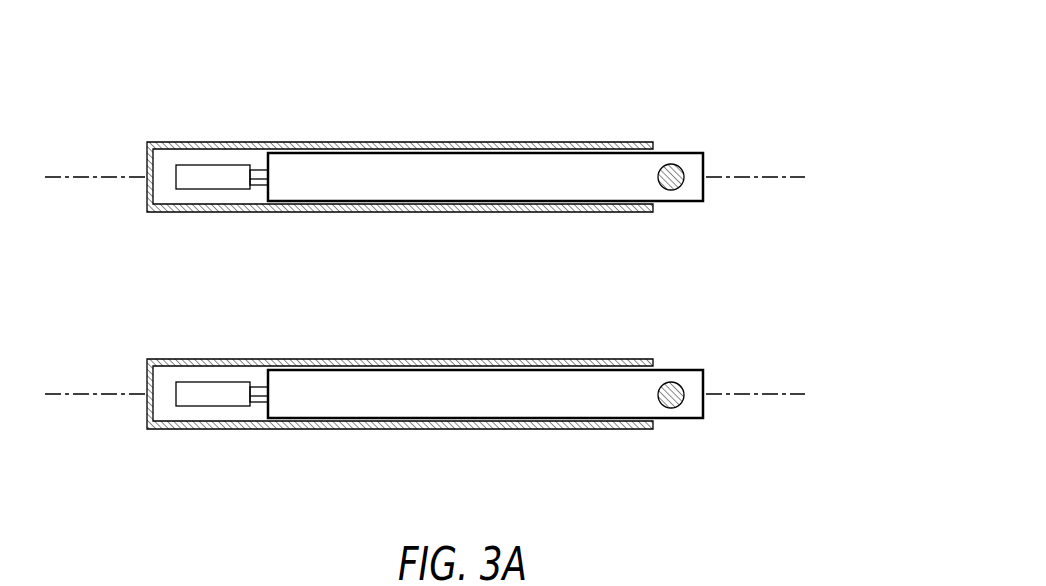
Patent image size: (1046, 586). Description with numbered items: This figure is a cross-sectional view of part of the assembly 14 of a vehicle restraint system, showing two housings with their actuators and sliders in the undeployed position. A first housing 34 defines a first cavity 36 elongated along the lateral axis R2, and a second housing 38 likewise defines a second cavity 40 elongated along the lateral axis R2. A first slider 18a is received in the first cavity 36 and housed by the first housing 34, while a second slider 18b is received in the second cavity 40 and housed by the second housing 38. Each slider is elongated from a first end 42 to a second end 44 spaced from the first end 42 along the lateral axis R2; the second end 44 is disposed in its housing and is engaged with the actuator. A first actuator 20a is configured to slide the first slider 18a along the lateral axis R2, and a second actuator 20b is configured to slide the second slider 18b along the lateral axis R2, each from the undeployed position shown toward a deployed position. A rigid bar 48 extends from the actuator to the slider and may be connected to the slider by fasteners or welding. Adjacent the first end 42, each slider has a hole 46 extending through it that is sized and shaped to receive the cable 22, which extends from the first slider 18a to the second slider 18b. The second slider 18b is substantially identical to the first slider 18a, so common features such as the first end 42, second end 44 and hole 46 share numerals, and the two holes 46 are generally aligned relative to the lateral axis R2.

The assembly 14 is at (564, 68).
The first slider 18a is at (713, 163).
The second slider 18b is at (713, 380).
The first actuator 20a is at (215, 165).
The second actuator 20b is at (215, 382).
The cable 22 is at (681, 168).
The first housing 34 is at (627, 141).
The first cavity 36 is at (171, 194).
The second housing 38 is at (627, 358).
The second cavity 40 is at (171, 411).
The first end 42 is at (704, 190).
The second end 44 is at (270, 162).
The hole 46 is at (672, 190).
The rigid bar 48 is at (258, 185).
The lateral axis R2 is at (425, 287).